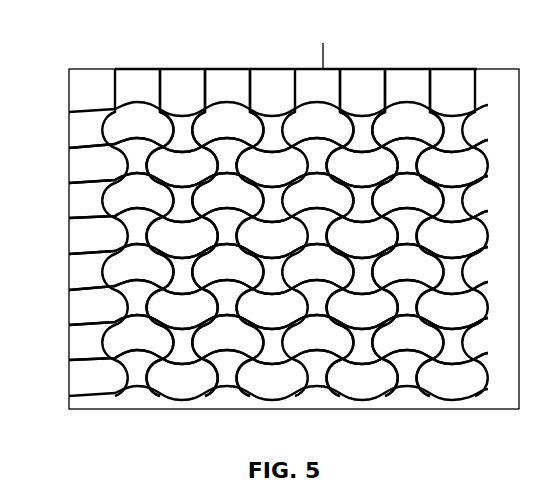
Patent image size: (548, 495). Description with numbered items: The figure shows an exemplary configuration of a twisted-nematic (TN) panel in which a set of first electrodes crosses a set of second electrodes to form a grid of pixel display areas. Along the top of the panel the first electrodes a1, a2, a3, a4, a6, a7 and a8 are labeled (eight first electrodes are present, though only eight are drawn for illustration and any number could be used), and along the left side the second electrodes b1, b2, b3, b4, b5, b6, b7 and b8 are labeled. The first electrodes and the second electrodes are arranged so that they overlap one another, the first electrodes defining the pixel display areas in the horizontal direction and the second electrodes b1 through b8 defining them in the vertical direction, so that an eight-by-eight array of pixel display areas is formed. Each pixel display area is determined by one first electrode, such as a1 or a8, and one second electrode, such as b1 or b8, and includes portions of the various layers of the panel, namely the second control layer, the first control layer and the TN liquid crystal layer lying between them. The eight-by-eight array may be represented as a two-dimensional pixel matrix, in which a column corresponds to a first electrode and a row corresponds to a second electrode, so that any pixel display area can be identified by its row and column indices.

The first electrode a1 is at (137, 69).
The first electrode a2 is at (182, 69).
The first electrode a3 is at (228, 69).
The first electrode a4 is at (278, 69).
The first electrode a6 is at (368, 69).
The first electrode a7 is at (412, 69).
The first electrode a8 is at (455, 69).
The second electrode b1 is at (88, 131).
The second electrode b2 is at (88, 166).
The second electrode b3 is at (88, 202).
The second electrode b4 is at (88, 238).
The second electrode b5 is at (88, 273).
The second electrode b6 is at (88, 308).
The second electrode b7 is at (88, 344).
The second electrode b8 is at (88, 380).